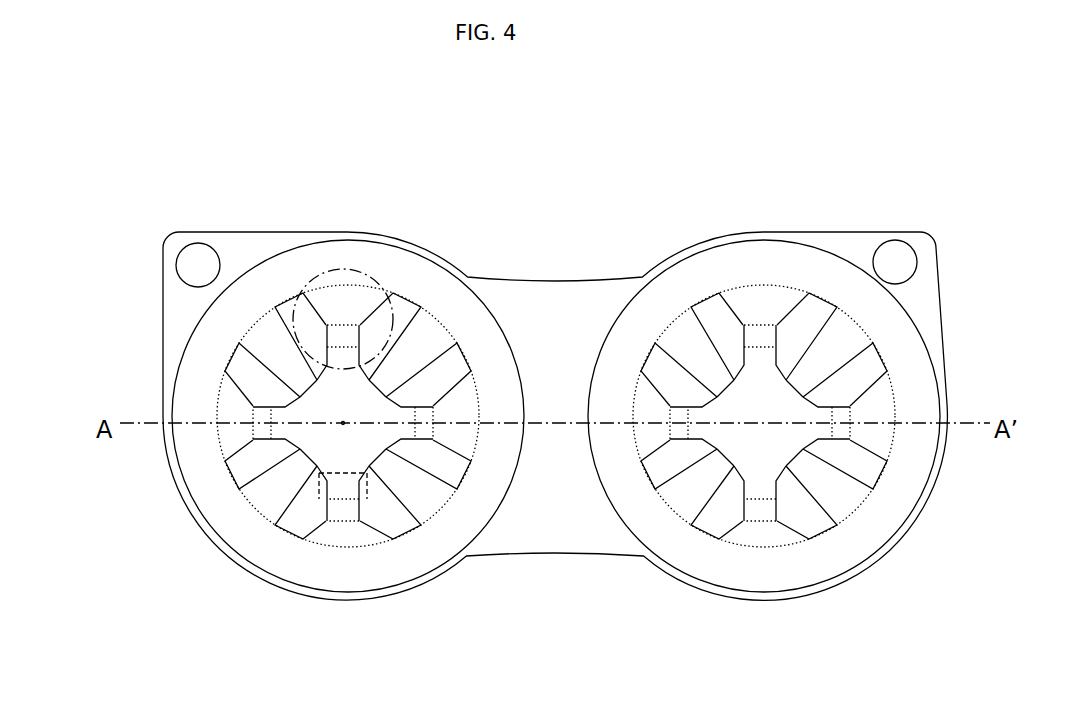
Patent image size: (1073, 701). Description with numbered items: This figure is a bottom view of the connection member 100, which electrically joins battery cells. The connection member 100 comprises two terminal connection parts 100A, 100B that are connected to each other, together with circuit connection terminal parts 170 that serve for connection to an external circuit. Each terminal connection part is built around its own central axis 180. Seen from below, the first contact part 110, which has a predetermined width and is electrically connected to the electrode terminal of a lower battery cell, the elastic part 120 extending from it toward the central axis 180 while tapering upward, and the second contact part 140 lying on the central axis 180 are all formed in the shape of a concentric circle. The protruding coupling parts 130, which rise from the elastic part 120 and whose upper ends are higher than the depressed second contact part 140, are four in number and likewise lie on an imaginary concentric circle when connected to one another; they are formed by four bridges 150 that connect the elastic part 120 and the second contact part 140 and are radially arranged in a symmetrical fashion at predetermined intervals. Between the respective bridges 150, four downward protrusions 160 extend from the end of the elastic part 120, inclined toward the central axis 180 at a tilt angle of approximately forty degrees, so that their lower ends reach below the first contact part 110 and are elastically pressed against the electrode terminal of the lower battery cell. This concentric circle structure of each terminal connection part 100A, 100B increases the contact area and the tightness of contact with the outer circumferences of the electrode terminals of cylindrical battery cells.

The connection member 100 is at (165, 150).
The terminal connection part 100A is at (418, 232).
The terminal connection part 100B is at (723, 220).
The first contact part 110 is at (442, 568).
The elastic part 120 is at (298, 268).
The protruding coupling parts 130 is at (348, 268).
The second contact part 140 is at (331, 471).
The bridges 150 is at (353, 547).
The downward protrusions 160 is at (278, 490).
The circuit connection terminal parts 170 is at (905, 260).
The central axis 180 is at (352, 432).